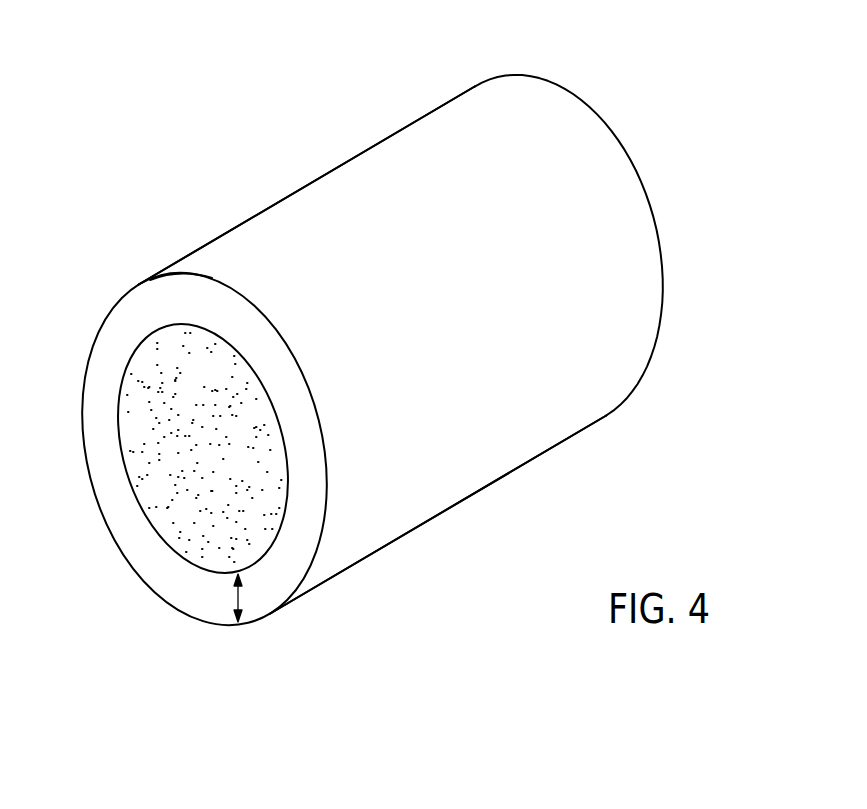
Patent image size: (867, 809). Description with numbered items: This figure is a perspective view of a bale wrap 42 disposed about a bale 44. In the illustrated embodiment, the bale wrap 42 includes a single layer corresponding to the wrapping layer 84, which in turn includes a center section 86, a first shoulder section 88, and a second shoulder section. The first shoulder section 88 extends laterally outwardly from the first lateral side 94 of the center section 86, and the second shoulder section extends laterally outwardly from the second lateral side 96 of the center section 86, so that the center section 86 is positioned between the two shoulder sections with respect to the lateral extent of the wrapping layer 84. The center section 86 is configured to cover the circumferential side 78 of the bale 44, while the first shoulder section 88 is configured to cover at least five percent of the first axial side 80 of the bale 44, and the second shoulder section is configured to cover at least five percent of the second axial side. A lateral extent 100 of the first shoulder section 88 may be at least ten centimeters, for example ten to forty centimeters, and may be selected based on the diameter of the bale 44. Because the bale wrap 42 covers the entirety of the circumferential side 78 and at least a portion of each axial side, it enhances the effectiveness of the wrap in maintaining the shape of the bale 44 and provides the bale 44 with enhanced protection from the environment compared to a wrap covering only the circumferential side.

The bale wrap 42 is at (503, 507).
The bale 44 is at (132, 459).
The circumferential side 78 is at (379, 100).
The first axial side 80 is at (267, 527).
The wrapping layer 84 is at (435, 517).
The center section 86 is at (320, 178).
The first shoulder section 88 is at (260, 600).
The first lateral side 94 is at (200, 276).
The second lateral side 96 is at (650, 212).
The lateral extent 100 is at (237, 600).